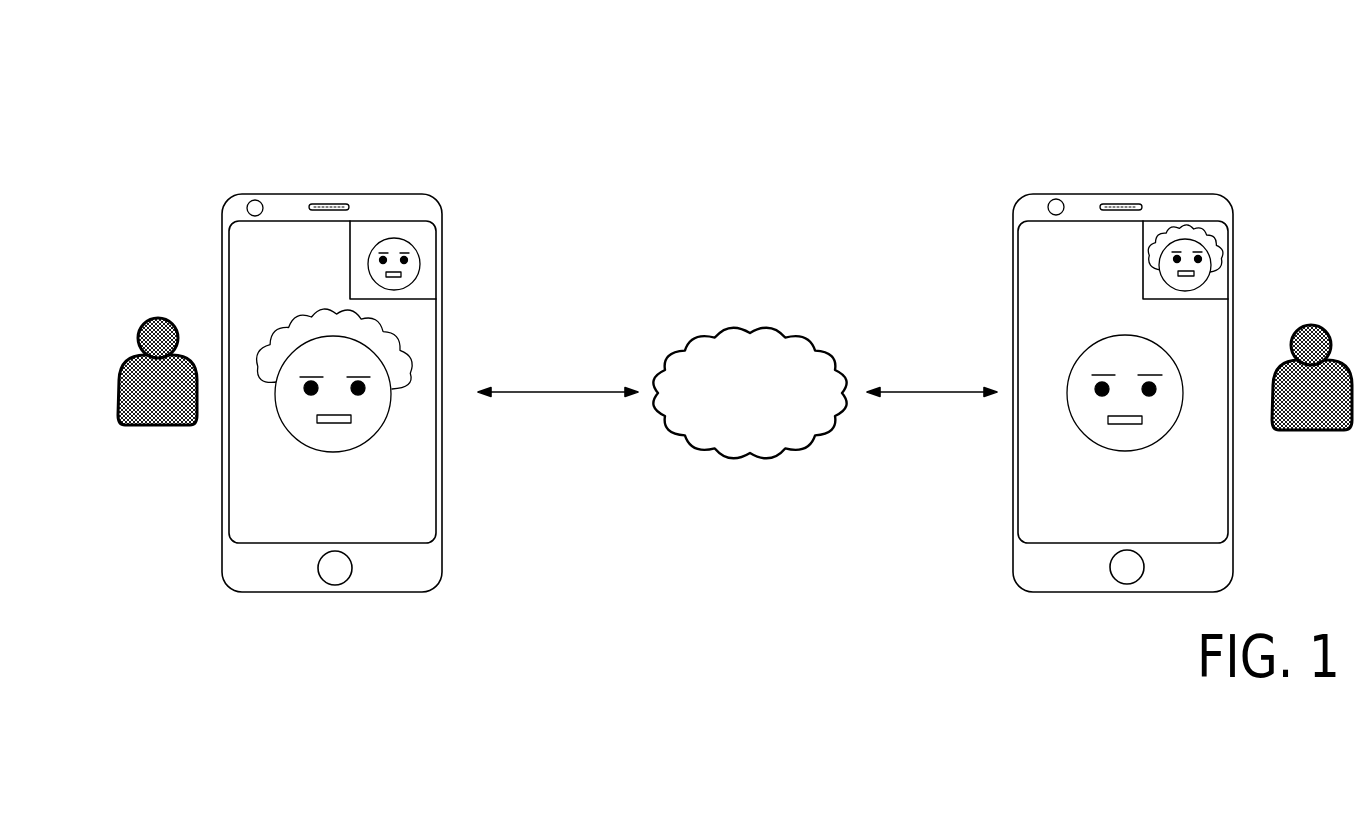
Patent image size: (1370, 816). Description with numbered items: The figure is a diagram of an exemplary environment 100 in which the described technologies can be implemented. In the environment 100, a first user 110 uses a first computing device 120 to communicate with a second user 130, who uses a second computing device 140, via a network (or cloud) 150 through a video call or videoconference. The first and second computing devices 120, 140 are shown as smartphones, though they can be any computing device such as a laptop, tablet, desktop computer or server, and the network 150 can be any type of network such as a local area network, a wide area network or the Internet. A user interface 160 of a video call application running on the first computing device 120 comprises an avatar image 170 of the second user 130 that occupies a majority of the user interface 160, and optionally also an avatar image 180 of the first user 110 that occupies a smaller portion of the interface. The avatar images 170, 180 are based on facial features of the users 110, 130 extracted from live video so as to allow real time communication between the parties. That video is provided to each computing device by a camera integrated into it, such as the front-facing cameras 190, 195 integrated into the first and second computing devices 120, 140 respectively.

The environment 100 is at (534, 128).
The first user 110 is at (157, 400).
The first computing device 120 is at (320, 532).
The second user 130 is at (1312, 406).
The second computing device 140 is at (1111, 532).
The network 150 is at (737, 428).
The user interface 160 is at (385, 220).
The avatar image 170 is at (295, 437).
The avatar image 180 is at (368, 264).
The camera 190 is at (257, 201).
The camera 195 is at (1052, 200).